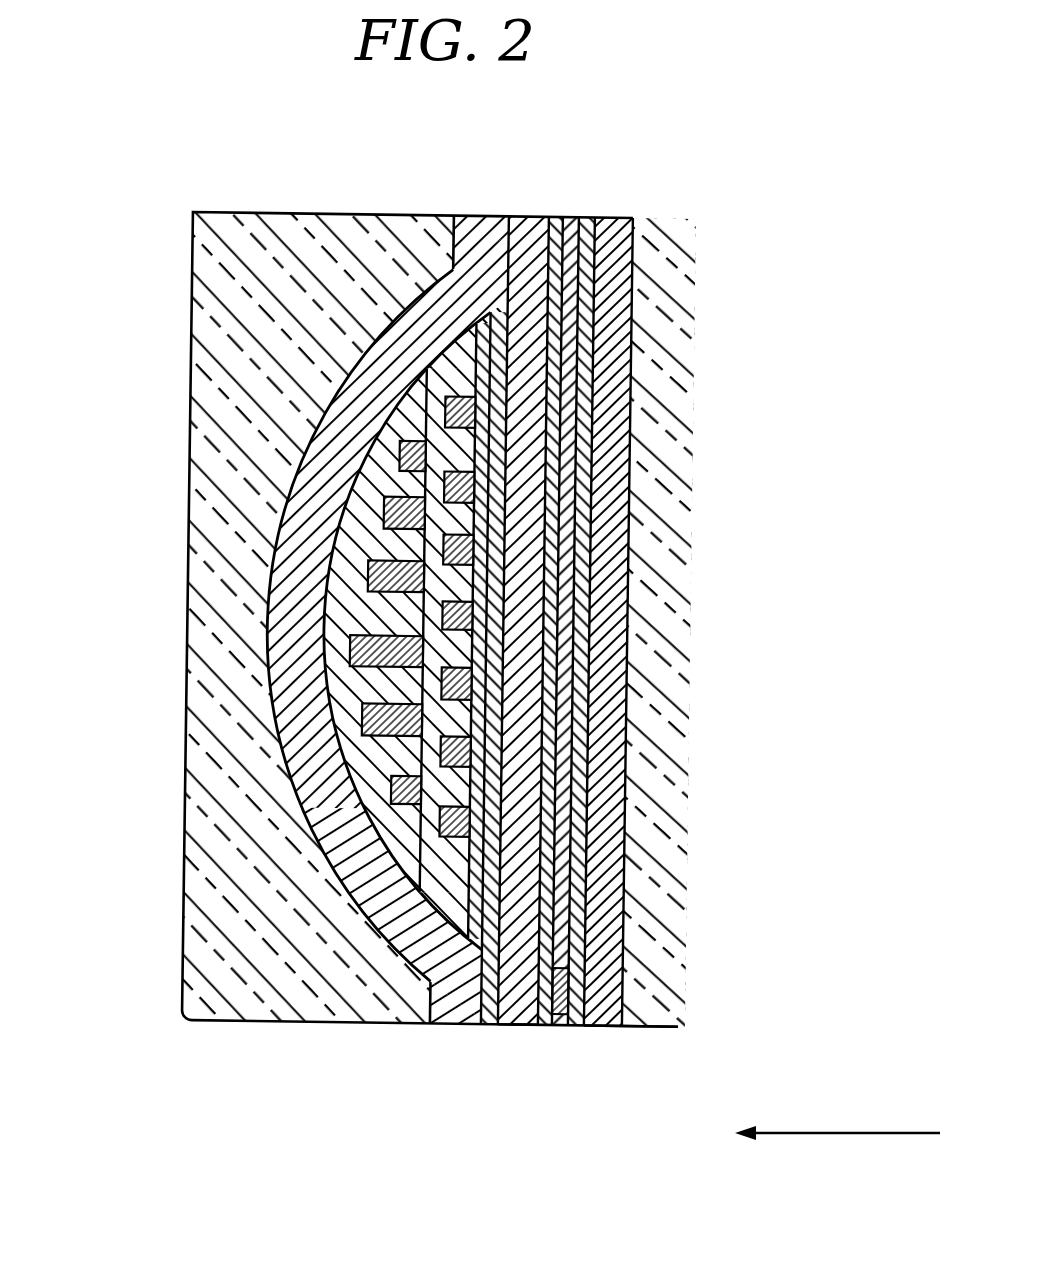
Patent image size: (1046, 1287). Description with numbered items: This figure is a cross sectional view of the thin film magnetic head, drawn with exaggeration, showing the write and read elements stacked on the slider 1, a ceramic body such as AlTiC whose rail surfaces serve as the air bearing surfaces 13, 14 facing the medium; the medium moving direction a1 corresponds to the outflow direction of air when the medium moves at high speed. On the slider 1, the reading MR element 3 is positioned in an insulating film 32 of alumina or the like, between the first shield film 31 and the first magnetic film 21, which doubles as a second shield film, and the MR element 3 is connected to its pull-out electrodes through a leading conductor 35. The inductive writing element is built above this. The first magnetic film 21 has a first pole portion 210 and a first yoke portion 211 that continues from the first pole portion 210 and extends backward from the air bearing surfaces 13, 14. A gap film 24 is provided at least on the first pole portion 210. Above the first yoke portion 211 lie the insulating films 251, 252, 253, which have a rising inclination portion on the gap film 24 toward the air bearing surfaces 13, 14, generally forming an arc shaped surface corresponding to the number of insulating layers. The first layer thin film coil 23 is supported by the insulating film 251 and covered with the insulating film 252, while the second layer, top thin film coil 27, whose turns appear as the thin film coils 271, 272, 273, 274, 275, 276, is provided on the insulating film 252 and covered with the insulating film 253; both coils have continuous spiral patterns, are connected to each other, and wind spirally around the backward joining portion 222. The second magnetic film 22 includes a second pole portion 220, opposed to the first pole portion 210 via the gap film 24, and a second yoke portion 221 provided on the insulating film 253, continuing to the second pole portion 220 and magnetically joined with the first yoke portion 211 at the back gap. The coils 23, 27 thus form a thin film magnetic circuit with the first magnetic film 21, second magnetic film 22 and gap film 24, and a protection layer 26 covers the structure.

The slider 1 is at (660, 277).
The MR element 3 is at (573, 1000).
The air bearing surface 13 is at (675, 1026).
The air bearing surface 14 is at (714, 1057).
The first magnetic film 21 is at (540, 926).
The first pole portion 210 is at (523, 1026).
The first yoke portion 211 is at (523, 612).
The second magnetic film 22 is at (340, 890).
The second pole portion 220 is at (460, 1026).
The second yoke portion 221 is at (378, 366).
The backward joining portion 222 is at (480, 219).
The thin film coil 23 is at (473, 430).
The gap film 24 is at (497, 543).
The insulating film 251 is at (470, 466).
The insulating film 252 is at (490, 338).
The insulating film 253 is at (470, 410).
The protection layer 26 is at (193, 276).
The thin film coil 27 is at (378, 808).
The thin film coil 271 is at (398, 792).
The thin film coil 272 is at (365, 720).
The thin film coil 273 is at (355, 652).
The thin film coil 274 is at (370, 577).
The thin film coil 275 is at (385, 514).
The thin film coil 276 is at (400, 458).
The first shield film 31 is at (617, 380).
The insulating film 32 is at (552, 691).
The leading conductor 35 is at (575, 772).
The medium moving direction a1 is at (870, 1130).